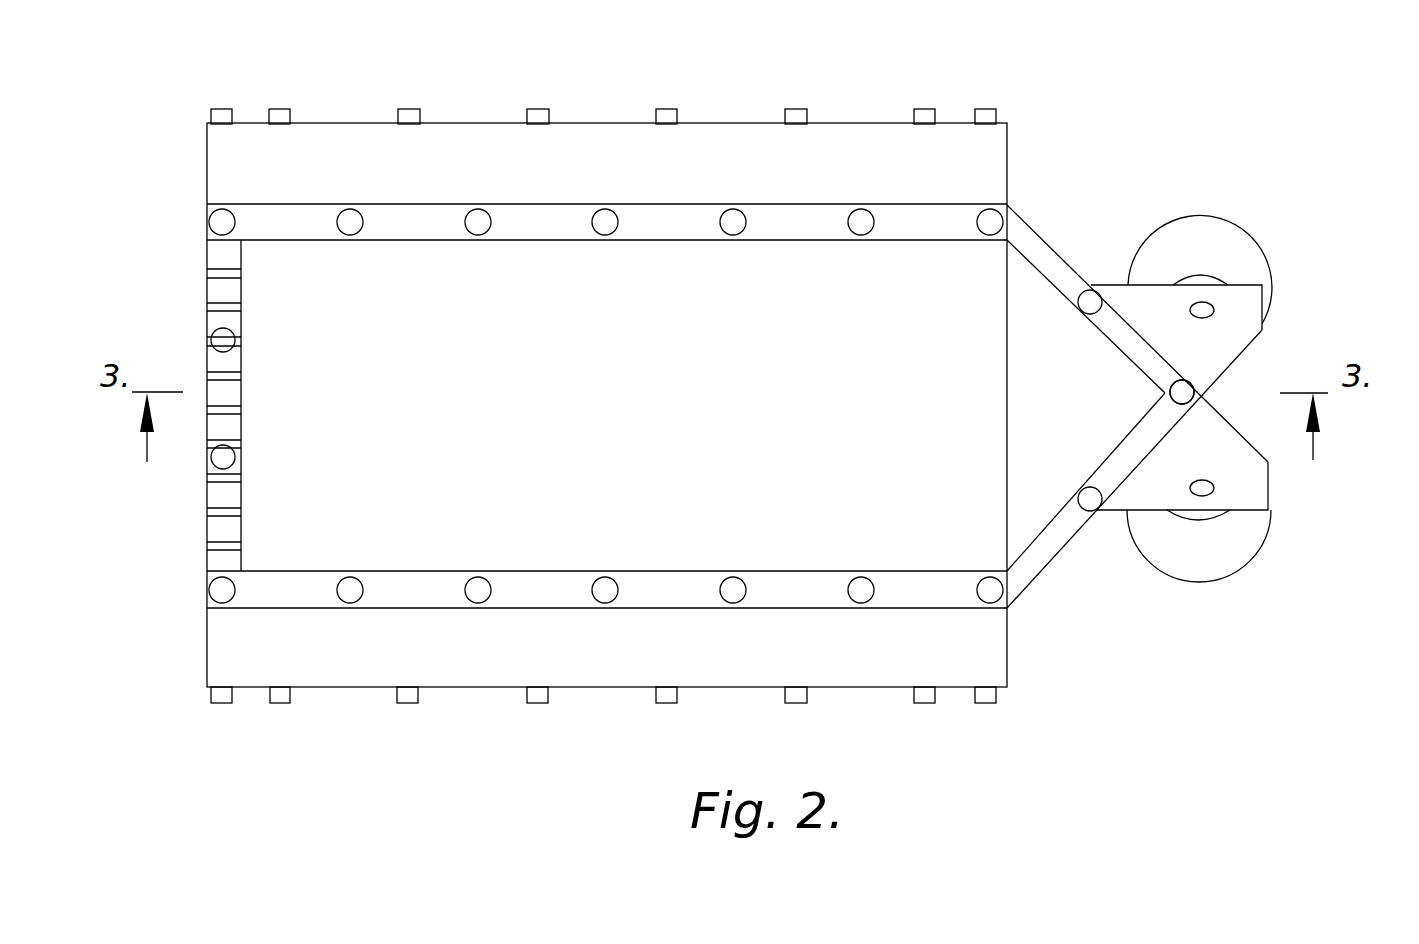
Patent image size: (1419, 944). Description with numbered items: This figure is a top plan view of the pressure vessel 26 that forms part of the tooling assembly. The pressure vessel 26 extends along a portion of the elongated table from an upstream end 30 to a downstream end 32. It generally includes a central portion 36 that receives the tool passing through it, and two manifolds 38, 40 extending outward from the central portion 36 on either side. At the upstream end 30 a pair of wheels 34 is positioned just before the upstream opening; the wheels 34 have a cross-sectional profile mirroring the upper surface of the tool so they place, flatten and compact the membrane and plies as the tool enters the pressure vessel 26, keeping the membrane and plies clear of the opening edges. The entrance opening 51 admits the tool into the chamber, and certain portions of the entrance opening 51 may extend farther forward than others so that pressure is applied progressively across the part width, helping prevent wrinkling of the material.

The pressure vessel 26 is at (162, 87).
The upstream end 30 is at (1308, 287).
The downstream end 32 is at (168, 505).
The wheels 34 is at (1198, 235).
The central portion 36 is at (990, 498).
The manifold 38 is at (570, 660).
The manifold 40 is at (693, 153).
The entrance opening 51 is at (1137, 390).